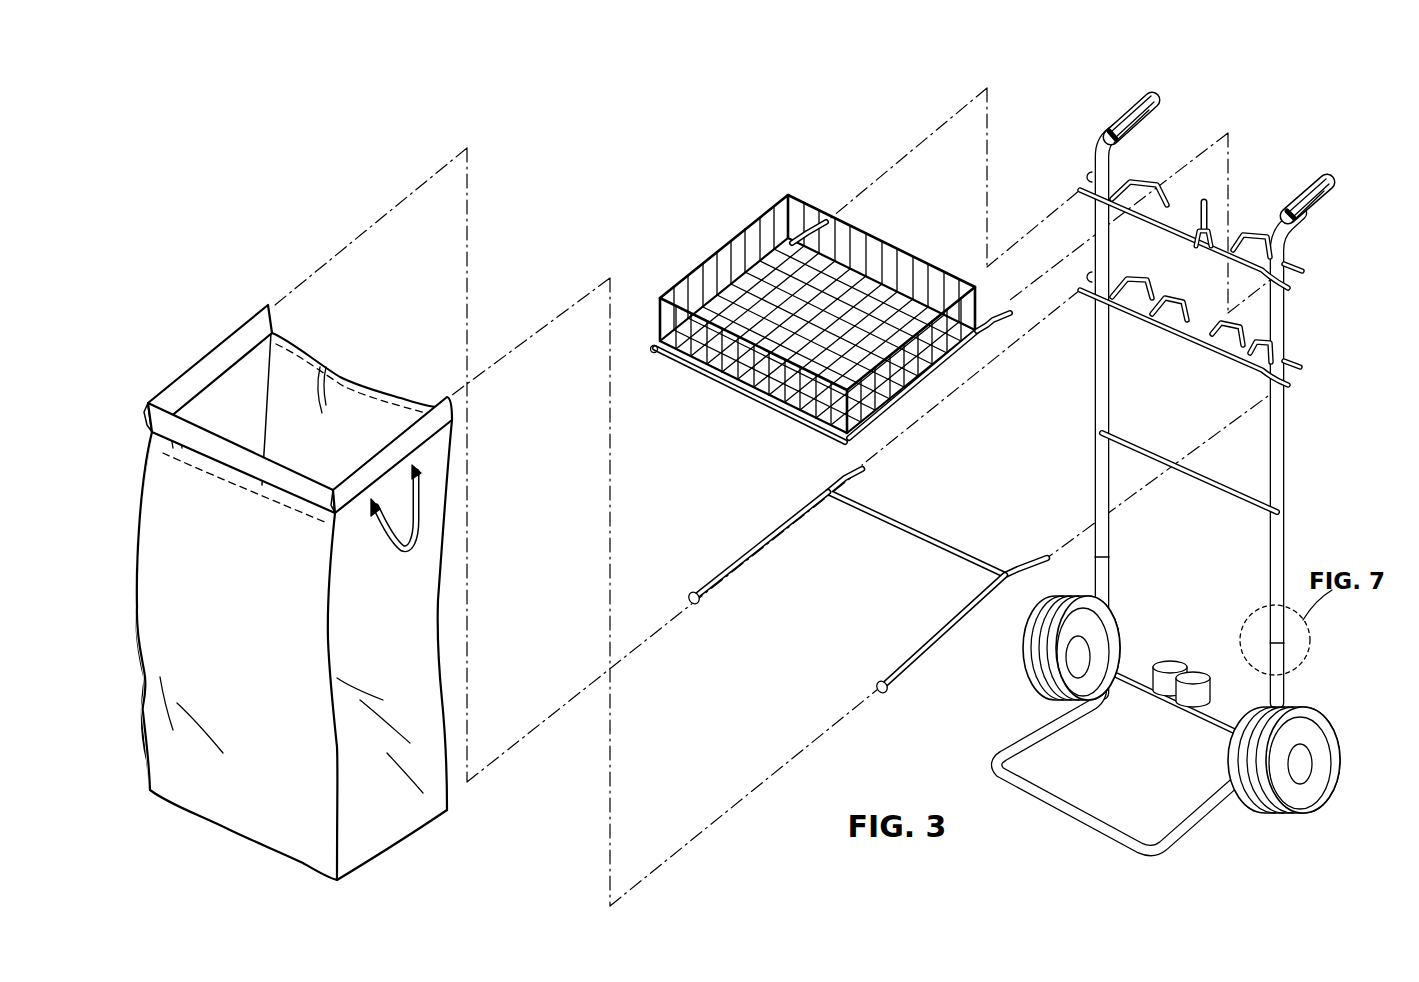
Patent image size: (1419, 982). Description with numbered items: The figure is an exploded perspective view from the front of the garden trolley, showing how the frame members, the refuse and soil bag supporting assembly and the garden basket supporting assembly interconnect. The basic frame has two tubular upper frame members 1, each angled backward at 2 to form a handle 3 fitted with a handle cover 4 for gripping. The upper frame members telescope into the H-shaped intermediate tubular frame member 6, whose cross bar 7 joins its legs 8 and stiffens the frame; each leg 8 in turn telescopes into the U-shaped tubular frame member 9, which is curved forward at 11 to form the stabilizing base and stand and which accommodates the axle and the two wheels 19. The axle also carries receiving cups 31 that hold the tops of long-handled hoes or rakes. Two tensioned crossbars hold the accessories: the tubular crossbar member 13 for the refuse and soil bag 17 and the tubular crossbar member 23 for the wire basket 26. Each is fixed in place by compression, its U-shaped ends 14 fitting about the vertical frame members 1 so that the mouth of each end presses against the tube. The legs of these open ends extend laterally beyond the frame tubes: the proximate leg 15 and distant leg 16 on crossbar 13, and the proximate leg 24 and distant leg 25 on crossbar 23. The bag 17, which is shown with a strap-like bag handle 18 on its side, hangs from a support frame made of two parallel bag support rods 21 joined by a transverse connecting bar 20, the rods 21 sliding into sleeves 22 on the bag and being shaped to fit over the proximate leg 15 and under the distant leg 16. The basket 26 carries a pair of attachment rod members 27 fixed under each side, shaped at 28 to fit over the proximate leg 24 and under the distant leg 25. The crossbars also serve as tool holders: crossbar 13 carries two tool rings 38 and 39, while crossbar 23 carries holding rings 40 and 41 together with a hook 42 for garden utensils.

The tubular upper frame member 1 is at (1283, 313).
The backward-angled portion 2 is at (1275, 256).
The handle 3 is at (1293, 233).
The handle cover 4 is at (1317, 181).
The H-shaped intermediate tubular frame member 6 is at (1283, 440).
The cross bar 7 is at (1150, 451).
The leg 8 is at (1283, 530).
The U-shaped tubular frame member 9 is at (1283, 682).
The forward curve 11 is at (1097, 668).
The tubular crossbar member 13 is at (1192, 328).
The U-shaped ends 14 is at (1112, 280).
The proximate leg 15 is at (1288, 387).
The distant leg 16 is at (1300, 364).
The refuse and soil bag 17 is at (230, 820).
The bag handle 18 is at (428, 490).
The wheel 19 is at (1307, 808).
The transverse connecting bar 20 is at (915, 533).
The bag support rod 21 is at (946, 630).
The sleeve 22 is at (433, 405).
The tubular crossbar member 23 is at (1169, 294).
The proximate leg 24 is at (1082, 189).
The distant leg 25 is at (1113, 182).
The wire basket 26 is at (740, 235).
The attachment rod member 27 is at (897, 410).
The shaped end of attachment rod member 28 is at (997, 314).
The receiving cup 31 is at (1187, 665).
The tool ring 38 is at (1223, 331).
The tool ring 39 is at (1168, 306).
The holding ring 40 is at (1245, 233).
The holding ring 41 is at (1167, 200).
The hook 42 is at (1204, 236).